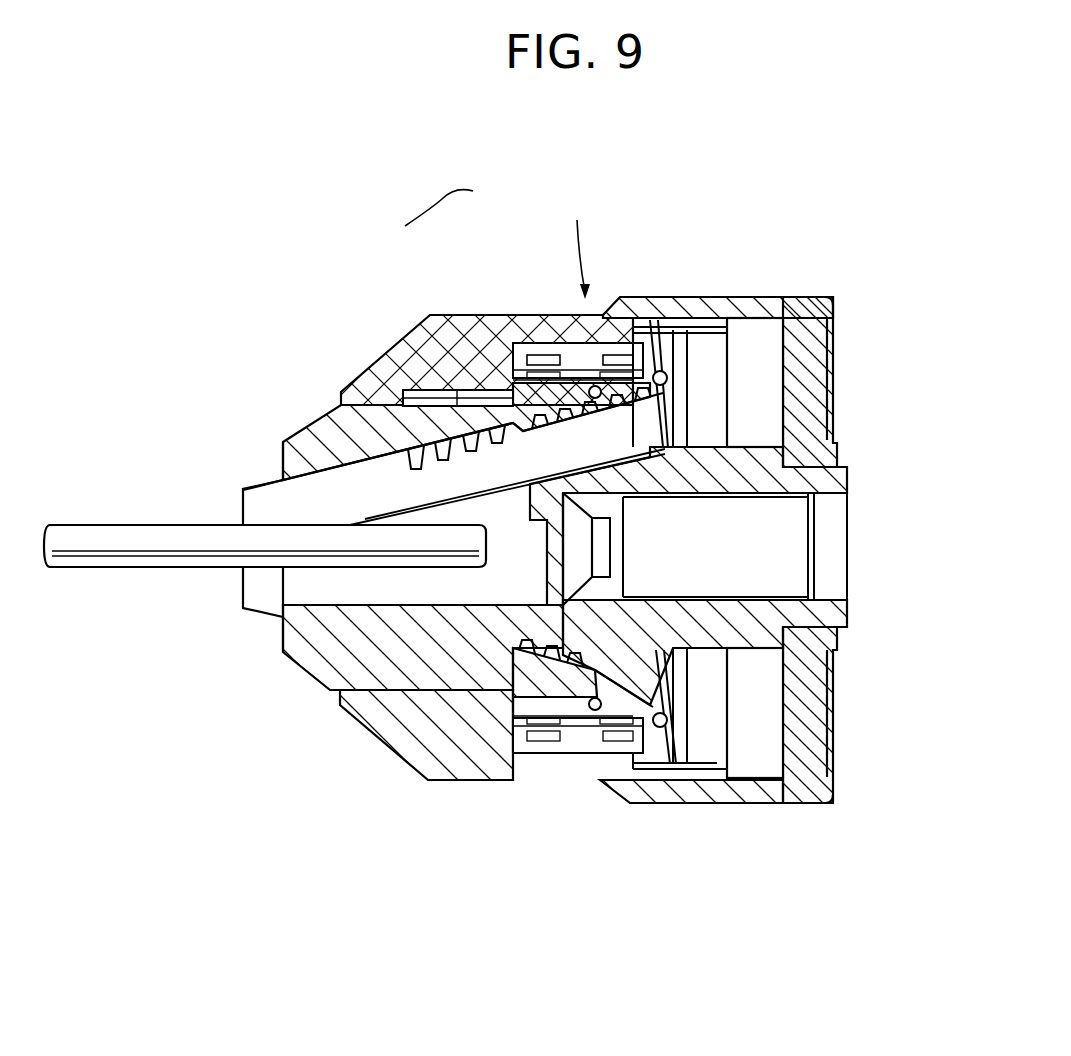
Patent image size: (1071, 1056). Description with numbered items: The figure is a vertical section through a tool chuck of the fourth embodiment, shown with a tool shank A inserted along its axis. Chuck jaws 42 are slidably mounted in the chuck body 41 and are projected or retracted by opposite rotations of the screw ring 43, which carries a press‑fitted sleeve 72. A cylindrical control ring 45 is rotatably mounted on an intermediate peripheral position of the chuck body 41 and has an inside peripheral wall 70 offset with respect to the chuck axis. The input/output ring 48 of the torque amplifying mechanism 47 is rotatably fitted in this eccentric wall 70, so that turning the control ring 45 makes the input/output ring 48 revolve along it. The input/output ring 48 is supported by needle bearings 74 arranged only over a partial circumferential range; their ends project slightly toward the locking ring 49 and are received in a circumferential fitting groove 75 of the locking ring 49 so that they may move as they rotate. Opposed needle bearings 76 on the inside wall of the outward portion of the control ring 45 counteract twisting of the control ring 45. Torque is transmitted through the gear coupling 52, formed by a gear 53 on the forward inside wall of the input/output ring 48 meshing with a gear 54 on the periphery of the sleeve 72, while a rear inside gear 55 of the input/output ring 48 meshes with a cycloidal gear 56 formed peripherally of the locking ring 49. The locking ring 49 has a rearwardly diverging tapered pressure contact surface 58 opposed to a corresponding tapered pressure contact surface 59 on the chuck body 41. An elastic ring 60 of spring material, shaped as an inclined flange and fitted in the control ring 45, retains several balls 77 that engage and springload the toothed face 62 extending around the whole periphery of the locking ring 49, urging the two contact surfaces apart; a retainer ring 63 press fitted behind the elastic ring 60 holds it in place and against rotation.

The tube A is at (190, 555).
The chuck body 41 is at (312, 660).
The chuck jaws 42 is at (260, 498).
The screw ring 43 is at (522, 440).
The control ring 45 is at (378, 718).
The torque amplifying mechanism 47 is at (577, 241).
The input/output ring 48 is at (572, 358).
The locking ring 49 is at (678, 372).
The gear coupling 52 is at (434, 201).
The gear 53 is at (577, 362).
The gear 54 is at (533, 358).
The gear 55 is at (653, 371).
The gear 56 is at (657, 333).
The tapered pressure contact surface 58 is at (617, 698).
The tapered pressure contact surface 59 is at (657, 706).
The elastic ring 60 is at (657, 760).
The toothed face 62 is at (680, 742).
The retainer ring 63 is at (690, 760).
The inside peripheral wall 70 is at (510, 703).
The sleeve 72 is at (527, 368).
The needle bearings 74 is at (603, 760).
The fitting groove 75 is at (679, 345).
The needle bearings 76 is at (515, 386).
The balls 77 is at (668, 718).